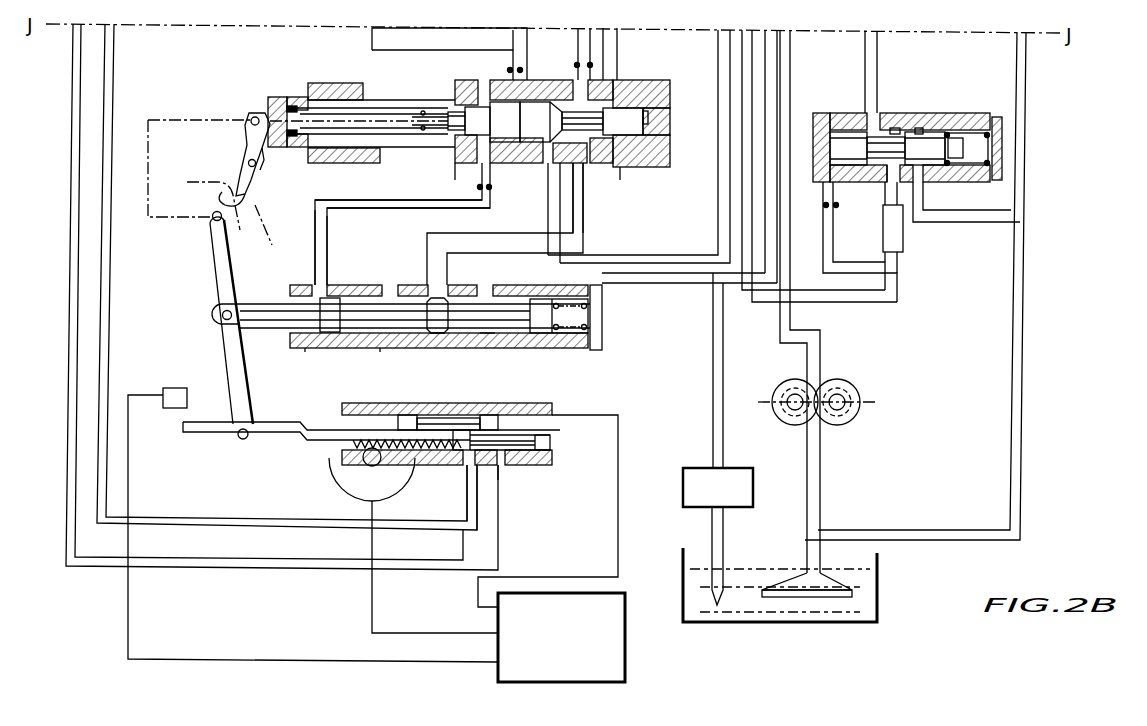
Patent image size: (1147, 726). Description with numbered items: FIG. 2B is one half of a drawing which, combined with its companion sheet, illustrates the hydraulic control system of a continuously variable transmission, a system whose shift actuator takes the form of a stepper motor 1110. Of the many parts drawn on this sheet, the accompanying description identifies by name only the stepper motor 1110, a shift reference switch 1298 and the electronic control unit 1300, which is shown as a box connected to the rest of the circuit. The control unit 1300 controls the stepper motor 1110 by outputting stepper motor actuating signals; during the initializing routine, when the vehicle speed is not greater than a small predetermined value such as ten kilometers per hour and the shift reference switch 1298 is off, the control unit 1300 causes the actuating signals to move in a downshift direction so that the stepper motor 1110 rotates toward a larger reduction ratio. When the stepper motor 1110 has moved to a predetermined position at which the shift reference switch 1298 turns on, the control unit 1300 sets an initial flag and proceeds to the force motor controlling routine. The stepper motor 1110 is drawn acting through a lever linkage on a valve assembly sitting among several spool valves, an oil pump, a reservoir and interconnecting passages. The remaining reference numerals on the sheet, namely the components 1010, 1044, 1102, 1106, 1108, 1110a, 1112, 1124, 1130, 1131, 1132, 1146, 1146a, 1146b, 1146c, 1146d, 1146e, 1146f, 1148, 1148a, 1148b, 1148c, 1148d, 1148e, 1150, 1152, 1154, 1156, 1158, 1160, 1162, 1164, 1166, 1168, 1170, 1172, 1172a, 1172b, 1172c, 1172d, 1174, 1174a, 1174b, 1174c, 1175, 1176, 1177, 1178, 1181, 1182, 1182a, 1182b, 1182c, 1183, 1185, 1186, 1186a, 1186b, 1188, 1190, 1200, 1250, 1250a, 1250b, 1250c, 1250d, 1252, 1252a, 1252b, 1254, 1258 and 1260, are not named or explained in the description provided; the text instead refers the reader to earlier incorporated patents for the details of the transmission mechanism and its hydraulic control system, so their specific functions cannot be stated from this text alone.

The pump 1010 is at (855, 378).
The actuating link 1044 is at (276, 218).
The passage 1102 is at (630, 250).
The valve assembly 1106 is at (528, 355).
The valve assembly 1108 is at (512, 470).
The stepper motor 1110 is at (322, 472).
The gear shaft 1110a is at (364, 462).
The lever assembly 1112 is at (213, 330).
The valve assembly 1124 is at (916, 102).
The reservoir 1130 is at (878, 612).
The filter 1131 is at (815, 597).
The pipe 1132 is at (795, 60).
The valve body 1146 is at (555, 82).
The port 1146a is at (458, 172).
The port 1146b is at (494, 170).
The port 1146c is at (562, 248).
The port 1146d is at (580, 212).
The port 1146e is at (657, 230).
The port 1146f is at (650, 170).
The spool 1148 is at (648, 118).
The spool land 1148a is at (475, 107).
The spool land 1148b is at (500, 102).
The spool land 1148c is at (532, 102).
The spool land 1148d is at (615, 108).
The end wall 1148e is at (655, 88).
The cylinder housing 1150 is at (282, 97).
The piston rod 1152 is at (373, 100).
The plunger 1154 is at (388, 110).
The cam follower 1156 is at (255, 188).
The cam follower arm 1158 is at (270, 172).
The passage 1160 is at (345, 218).
The pipe 1162 is at (372, 40).
The pipe 1164 is at (706, 60).
The passage 1166 is at (410, 200).
The pipe 1168 is at (518, 45).
The pipe 1170 is at (600, 48).
The valve body 1172 is at (340, 348).
The port 1172a is at (312, 348).
The port 1172b is at (383, 348).
The port 1172c is at (430, 348).
The port 1172d is at (488, 348).
The spool rod 1174 is at (240, 305).
The spool land 1174a is at (330, 298).
The spool land 1174b is at (436, 300).
The piston 1174c is at (560, 312).
The end cap 1175 is at (585, 350).
The pipe 1176 is at (705, 242).
The passage 1177 is at (500, 230).
The lever 1178 is at (228, 350).
The pivot pin 1181 is at (222, 310).
The rack valve spool 1182 is at (300, 440).
The spool land 1182a is at (462, 430).
The spool land 1182b is at (540, 432).
The rack teeth 1182c is at (425, 450).
The pivot 1183 is at (250, 113).
The roller 1185 is at (238, 438).
The valve body 1186 is at (552, 420).
The port 1186a is at (470, 500).
The port 1186b is at (515, 470).
The pipe 1188 is at (225, 572).
The pipe 1190 is at (118, 60).
The pipe 1200 is at (898, 525).
The valve body 1250 is at (990, 130).
The spool land 1250a is at (838, 132).
The spool neck 1250b is at (880, 113).
The spool land 1250c is at (925, 113).
The end wall 1250d is at (1002, 108).
The plunger 1252 is at (965, 152).
The port 1252a is at (840, 160).
The port 1252b is at (930, 160).
The chamber 1254 is at (935, 168).
The restrictor 1258 is at (878, 205).
The pipe 1260 is at (903, 245).
The shift reference switch 1298 is at (175, 388).
The electronic control unit 1300 is at (627, 670).